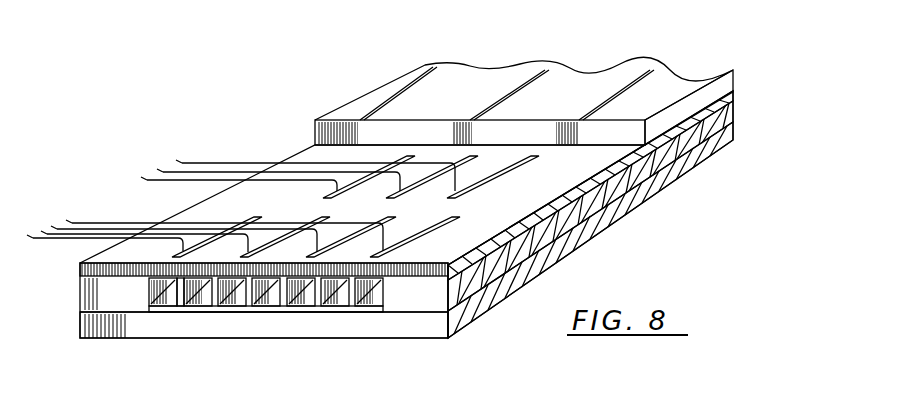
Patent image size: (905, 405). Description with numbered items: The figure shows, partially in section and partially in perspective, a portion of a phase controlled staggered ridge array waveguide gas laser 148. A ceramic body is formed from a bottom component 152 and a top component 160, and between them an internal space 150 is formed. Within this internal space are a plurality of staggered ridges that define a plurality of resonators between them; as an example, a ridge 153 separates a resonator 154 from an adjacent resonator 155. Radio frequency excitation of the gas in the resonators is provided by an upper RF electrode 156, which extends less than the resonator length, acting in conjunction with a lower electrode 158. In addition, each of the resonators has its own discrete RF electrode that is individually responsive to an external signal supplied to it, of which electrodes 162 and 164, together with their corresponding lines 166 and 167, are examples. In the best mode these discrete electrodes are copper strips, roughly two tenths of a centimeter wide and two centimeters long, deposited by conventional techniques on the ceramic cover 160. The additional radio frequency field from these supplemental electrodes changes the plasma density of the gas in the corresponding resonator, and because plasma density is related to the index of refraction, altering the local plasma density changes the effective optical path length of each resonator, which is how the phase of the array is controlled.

The phase controlled staggered ridge array waveguide gas laser 148 is at (178, 97).
The internal space 150 is at (393, 298).
The bottom component 152 is at (88, 292).
The ridge 153 is at (182, 303).
The resonator 154 is at (170, 302).
The resonator 155 is at (205, 303).
The upper RF electrode 156 is at (622, 72).
The lower electrode 158 is at (433, 337).
The top component 160 is at (318, 165).
The discrete RF electrode 162 is at (444, 222).
The discrete RF electrode 164 is at (516, 159).
The line 166 is at (387, 234).
The line 167 is at (466, 178).